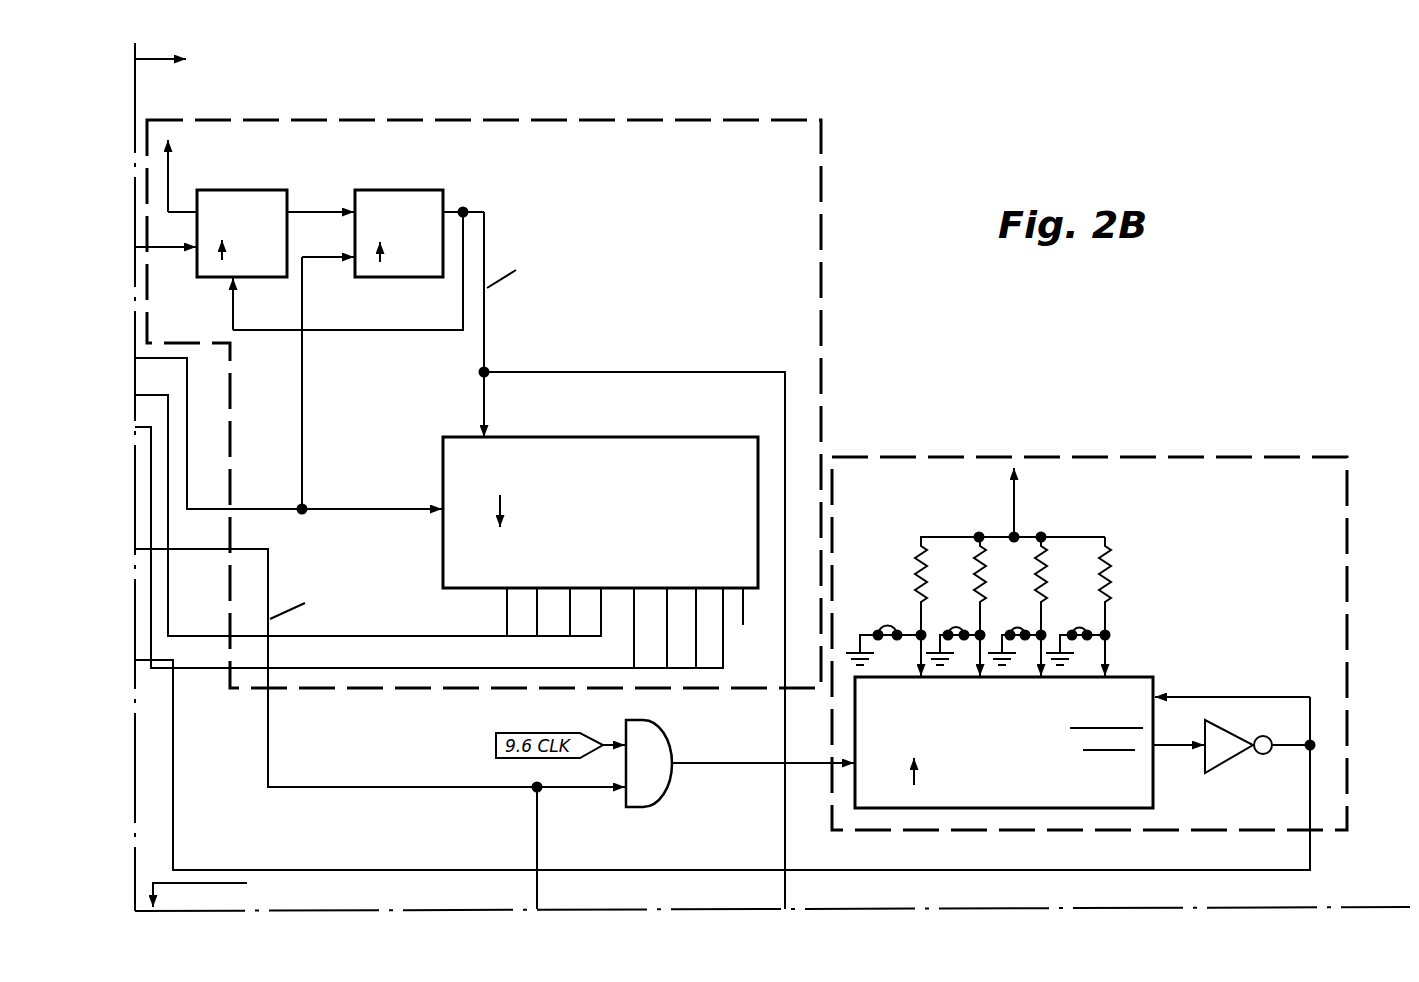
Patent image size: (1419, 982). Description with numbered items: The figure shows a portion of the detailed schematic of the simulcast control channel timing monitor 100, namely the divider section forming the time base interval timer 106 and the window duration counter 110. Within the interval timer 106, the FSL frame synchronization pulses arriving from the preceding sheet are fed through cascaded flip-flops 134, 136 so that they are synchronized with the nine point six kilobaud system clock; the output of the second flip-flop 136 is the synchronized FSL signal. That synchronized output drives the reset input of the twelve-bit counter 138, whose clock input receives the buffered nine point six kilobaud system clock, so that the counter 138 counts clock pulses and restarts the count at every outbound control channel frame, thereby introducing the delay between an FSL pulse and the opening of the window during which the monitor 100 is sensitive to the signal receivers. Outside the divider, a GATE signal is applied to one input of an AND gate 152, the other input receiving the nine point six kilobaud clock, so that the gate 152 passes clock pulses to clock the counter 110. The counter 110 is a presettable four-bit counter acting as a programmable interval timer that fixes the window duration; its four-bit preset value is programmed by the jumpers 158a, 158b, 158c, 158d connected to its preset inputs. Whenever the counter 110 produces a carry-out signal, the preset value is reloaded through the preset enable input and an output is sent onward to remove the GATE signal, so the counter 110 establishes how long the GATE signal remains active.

The simulcast control channel timing monitor 100 is at (565, 52).
The time base interval timer 106 is at (670, 117).
The counter 110 is at (1133, 456).
The flip-flop 134 is at (240, 188).
The flip-flop 136 is at (405, 188).
The twelve-bit counter 138 is at (601, 436).
The AND gate 152 is at (656, 749).
The jumper 158a is at (888, 624).
The jumper 158b is at (955, 624).
The jumper 158c is at (1013, 624).
The jumper 158d is at (1076, 624).